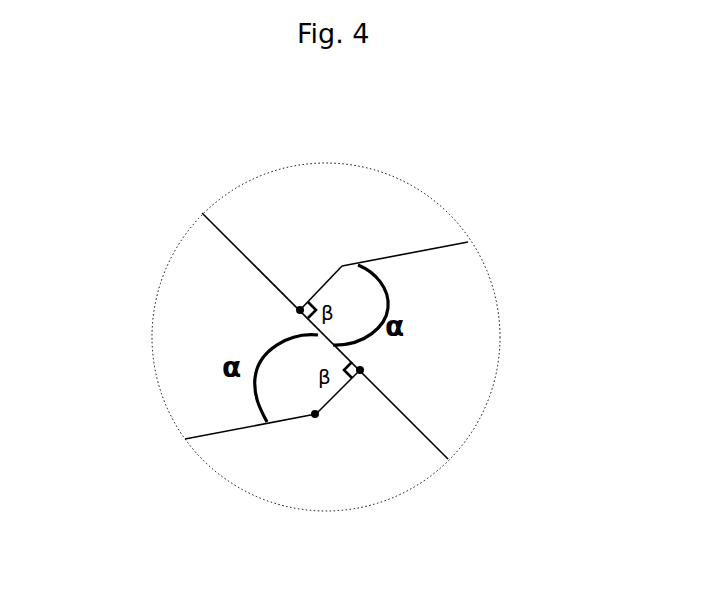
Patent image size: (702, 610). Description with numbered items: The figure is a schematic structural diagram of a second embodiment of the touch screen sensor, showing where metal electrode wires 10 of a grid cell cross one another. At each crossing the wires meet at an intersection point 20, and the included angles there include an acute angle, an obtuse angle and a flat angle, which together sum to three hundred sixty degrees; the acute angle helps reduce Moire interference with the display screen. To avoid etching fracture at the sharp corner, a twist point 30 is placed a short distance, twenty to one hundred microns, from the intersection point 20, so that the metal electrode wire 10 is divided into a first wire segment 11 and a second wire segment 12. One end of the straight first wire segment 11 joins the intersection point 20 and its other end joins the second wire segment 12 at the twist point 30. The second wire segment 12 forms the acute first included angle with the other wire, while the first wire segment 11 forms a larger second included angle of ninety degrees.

The metal electrode wire 10 is at (219, 229).
The first wire segment 11 is at (330, 400).
The second wire segment 12 is at (244, 428).
The intersection point 20 is at (300, 310).
The twist point 30 is at (312, 418).